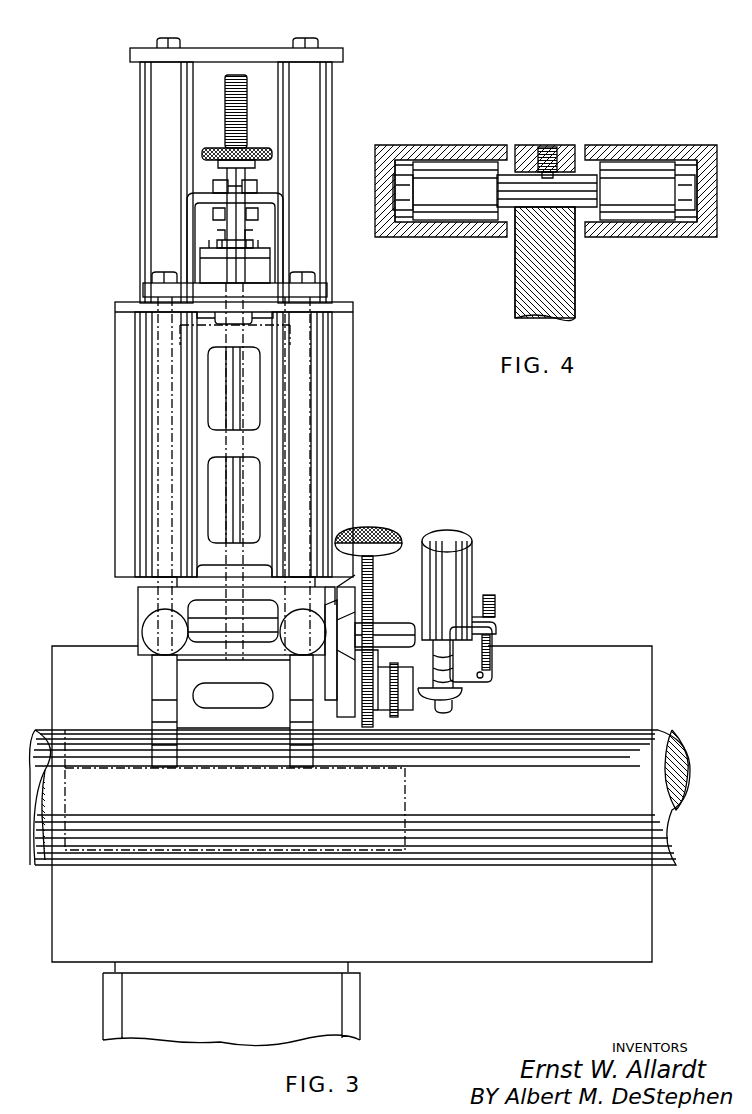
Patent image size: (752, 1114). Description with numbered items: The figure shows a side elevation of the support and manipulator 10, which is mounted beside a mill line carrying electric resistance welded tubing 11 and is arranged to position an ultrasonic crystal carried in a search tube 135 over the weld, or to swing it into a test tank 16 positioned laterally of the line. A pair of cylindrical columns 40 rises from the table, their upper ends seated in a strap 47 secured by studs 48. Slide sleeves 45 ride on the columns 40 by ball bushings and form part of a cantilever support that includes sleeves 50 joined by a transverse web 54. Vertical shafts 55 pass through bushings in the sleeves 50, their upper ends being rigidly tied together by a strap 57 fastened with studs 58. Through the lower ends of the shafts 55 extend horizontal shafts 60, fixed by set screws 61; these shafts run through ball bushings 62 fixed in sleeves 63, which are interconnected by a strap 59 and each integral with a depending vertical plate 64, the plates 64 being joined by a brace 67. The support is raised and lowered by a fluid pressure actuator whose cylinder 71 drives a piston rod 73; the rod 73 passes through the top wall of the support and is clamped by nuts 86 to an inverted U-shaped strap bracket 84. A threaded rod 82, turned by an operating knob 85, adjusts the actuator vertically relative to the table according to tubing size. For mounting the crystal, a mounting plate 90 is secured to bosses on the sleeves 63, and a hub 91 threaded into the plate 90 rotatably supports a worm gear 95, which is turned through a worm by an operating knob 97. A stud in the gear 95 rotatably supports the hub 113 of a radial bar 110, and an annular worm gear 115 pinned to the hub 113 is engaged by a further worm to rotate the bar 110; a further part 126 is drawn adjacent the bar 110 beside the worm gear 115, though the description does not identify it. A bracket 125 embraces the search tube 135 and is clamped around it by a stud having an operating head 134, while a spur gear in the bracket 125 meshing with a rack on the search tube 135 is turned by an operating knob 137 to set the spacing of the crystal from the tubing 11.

In FIG. 3, the support and manipulator 10 is at (87, 269).
In FIG. 3, the electric resistance welded tubing 11 is at (582, 740).
In FIG. 3, the test tank 16 is at (600, 646).
In FIG. 3, the cylindrical columns 40 is at (140, 102).
In FIG. 3, the slide sleeves 45 is at (115, 442).
In FIG. 3, the strap 47 is at (232, 50).
In FIG. 3, the studs 48 is at (157, 43).
In FIG. 3, the sleeves 50 is at (153, 395).
In FIG. 3, the transverse web 54 is at (265, 328).
In FIG. 3, the vertical shafts 55 is at (138, 590).
In FIG. 4, the vertical shafts 55 is at (555, 272).
In FIG. 3, the strap 57 is at (327, 290).
In FIG. 3, the studs 58 is at (315, 277).
In FIG. 3, the strap 59 is at (233, 620).
In FIG. 4, the horizontal shafts 60 is at (562, 185).
In FIG. 4, the set screws 61 is at (548, 160).
In FIG. 4, the ball bushings 62 is at (445, 188).
In FIG. 3, the sleeves 63 is at (165, 632).
In FIG. 4, the sleeves 63 is at (488, 145).
In FIG. 3, the depending vertical plates 64 is at (152, 685).
In FIG. 3, the brace 67 is at (185, 713).
In FIG. 3, the cylinder 71 is at (260, 268).
In FIG. 3, the piston rod 73 is at (250, 243).
In FIG. 3, the rod 82 is at (250, 212).
In FIG. 3, the inverted U-shaped strap bracket 84 is at (187, 225).
In FIG. 3, the operating knob 85 is at (268, 152).
In FIG. 3, the nuts 86 is at (213, 186).
In FIG. 3, the mounting plate 90 is at (331, 700).
In FIG. 3, the hub 91 is at (349, 646).
In FIG. 3, the worm gear 95 is at (374, 582).
In FIG. 3, the operating knob 97 is at (378, 527).
In FIG. 3, the radial bar 110 is at (396, 625).
In FIG. 3, the hub 113 is at (408, 700).
In FIG. 3, the annular worm gear 115 is at (452, 707).
In FIG. 3, the bracket 125 is at (480, 666).
In FIG. 3, the block 126 is at (388, 648).
In FIG. 3, the operating head 134 is at (495, 600).
In FIG. 3, the search tube 135 is at (470, 572).
In FIG. 3, the operating knob 137 is at (492, 628).